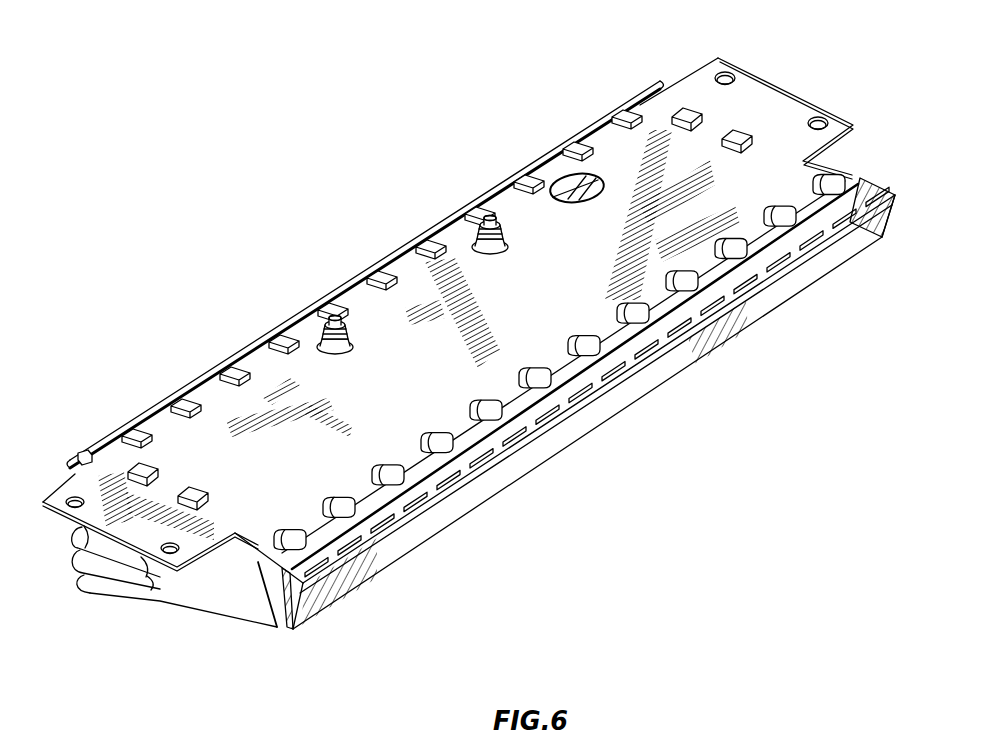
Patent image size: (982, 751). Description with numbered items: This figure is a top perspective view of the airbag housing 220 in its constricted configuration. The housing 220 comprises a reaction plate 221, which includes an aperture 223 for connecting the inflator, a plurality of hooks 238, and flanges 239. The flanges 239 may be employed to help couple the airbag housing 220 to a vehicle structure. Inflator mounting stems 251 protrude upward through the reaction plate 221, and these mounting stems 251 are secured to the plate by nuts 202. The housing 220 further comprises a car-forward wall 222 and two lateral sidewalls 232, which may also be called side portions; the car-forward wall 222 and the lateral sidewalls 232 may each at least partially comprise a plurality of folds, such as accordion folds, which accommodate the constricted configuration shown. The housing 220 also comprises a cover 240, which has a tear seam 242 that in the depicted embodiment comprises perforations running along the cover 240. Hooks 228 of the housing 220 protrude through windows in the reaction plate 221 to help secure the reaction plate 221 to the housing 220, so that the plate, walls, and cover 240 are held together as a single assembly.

The nuts 202 is at (322, 359).
The airbag housing 220 is at (381, 225).
The reaction plate 221 is at (455, 364).
The car-forward wall 222 is at (64, 474).
The aperture 223 is at (577, 175).
The hooks 228 is at (133, 428).
The lateral sidewalls 232 is at (253, 595).
The hooks 238 is at (350, 497).
The flanges 239 is at (765, 112).
The cover 240 is at (551, 443).
The tear seam 242 is at (601, 382).
The inflator mounting stems 251 is at (330, 316).